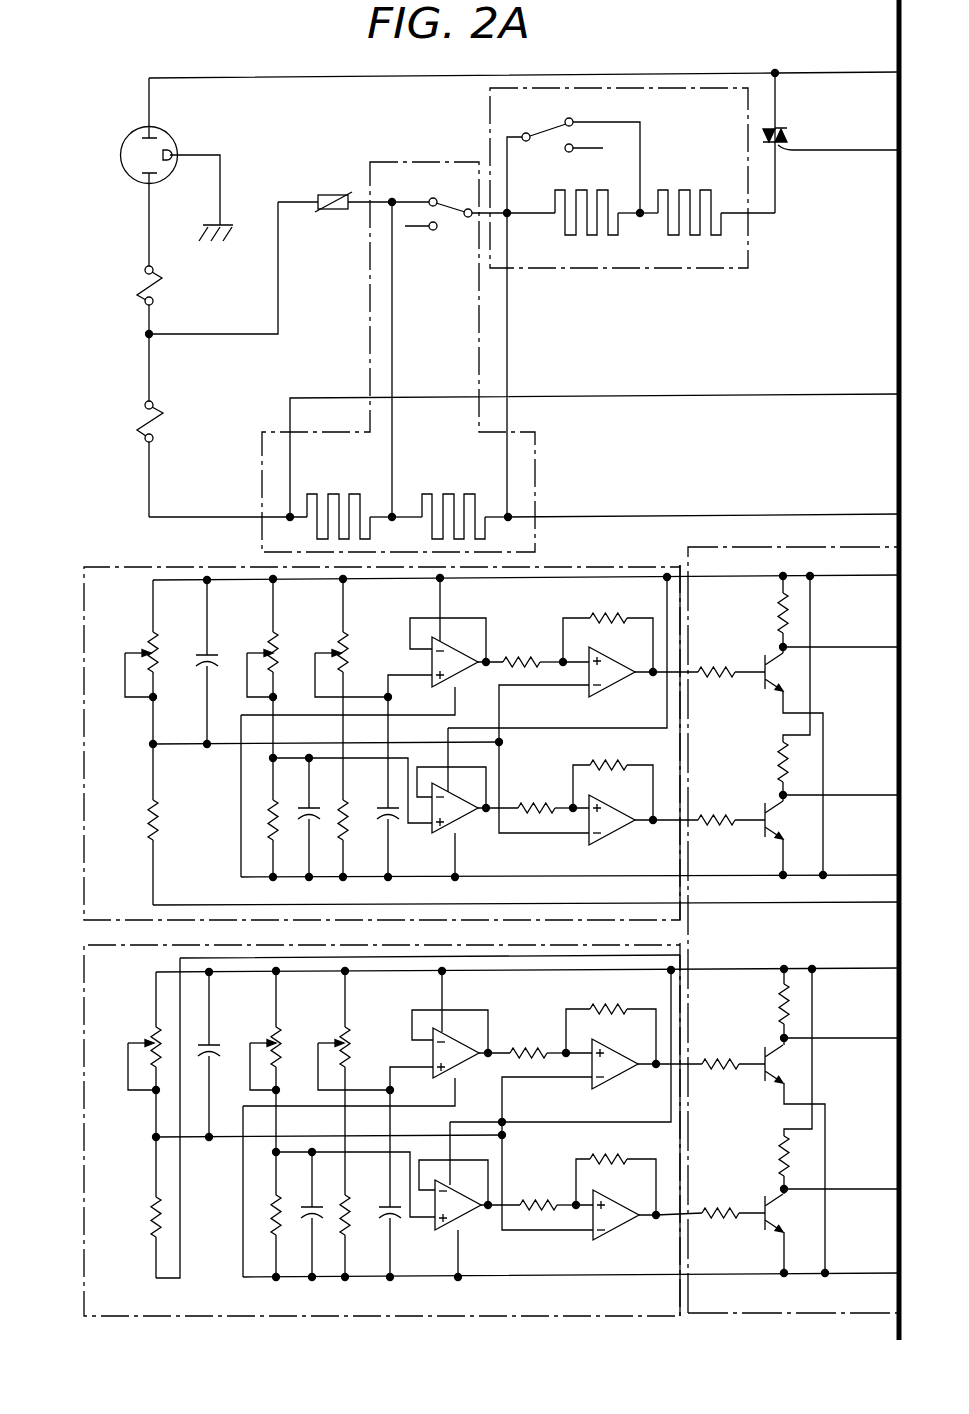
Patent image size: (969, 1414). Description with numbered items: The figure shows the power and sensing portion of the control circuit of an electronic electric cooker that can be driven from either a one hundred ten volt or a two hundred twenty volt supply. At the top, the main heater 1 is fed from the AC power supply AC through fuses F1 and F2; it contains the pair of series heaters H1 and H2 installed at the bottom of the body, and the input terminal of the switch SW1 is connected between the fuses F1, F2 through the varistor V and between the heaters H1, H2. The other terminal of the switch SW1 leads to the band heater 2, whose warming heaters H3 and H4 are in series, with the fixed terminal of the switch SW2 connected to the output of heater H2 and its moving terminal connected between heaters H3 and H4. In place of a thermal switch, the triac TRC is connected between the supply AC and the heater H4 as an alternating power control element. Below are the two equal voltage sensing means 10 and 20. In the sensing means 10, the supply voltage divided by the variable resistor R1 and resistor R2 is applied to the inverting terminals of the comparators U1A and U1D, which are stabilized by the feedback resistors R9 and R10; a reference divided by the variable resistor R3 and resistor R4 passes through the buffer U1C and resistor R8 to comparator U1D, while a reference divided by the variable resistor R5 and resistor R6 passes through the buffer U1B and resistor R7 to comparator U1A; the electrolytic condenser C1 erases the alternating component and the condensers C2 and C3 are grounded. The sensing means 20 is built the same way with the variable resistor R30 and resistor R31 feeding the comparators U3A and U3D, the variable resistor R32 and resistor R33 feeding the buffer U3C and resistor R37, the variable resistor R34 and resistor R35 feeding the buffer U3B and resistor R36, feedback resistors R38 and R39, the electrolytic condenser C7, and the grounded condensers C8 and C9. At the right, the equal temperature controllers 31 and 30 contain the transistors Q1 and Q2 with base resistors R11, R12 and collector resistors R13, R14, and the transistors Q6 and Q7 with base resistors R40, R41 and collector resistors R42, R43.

The main heater 1 is at (480, 366).
The band heater 2 is at (626, 270).
The voltage sensing means 10 is at (83, 768).
The voltage sensing means 20 is at (83, 1163).
The temperature controller 30 is at (834, 1313).
The temperature controller 31 is at (688, 547).
The AC power supply AC is at (161, 172).
The fuse F1 is at (136, 333).
The fuse F2 is at (135, 459).
The varistor V is at (335, 215).
The switch SW1 is at (456, 220).
The switch SW2 is at (573, 156).
The heater H1 is at (270, 503).
The heater H2 is at (450, 503).
The heater H3 is at (573, 226).
The heater H4 is at (707, 226).
The triac TRC is at (831, 143).
The variable resistor R1 is at (154, 662).
The resistor R2 is at (165, 824).
The variable resistor R3 is at (275, 668).
The resistor R4 is at (260, 817).
The variable resistor R5 is at (353, 689).
The resistor R6 is at (355, 838).
The resistor R7 is at (535, 649).
The resistor R8 is at (547, 796).
The feedback resistor R9 is at (608, 631).
The feedback resistor R10 is at (613, 778).
The base resistor R11 is at (709, 659).
The base resistor R12 is at (709, 808).
The collector resistor R13 is at (823, 613).
The collector resistor R14 is at (823, 687).
The electrolytic condenser C1 is at (213, 662).
The condenser C2 is at (316, 817).
The condenser C3 is at (400, 776).
The comparator U1A is at (578, 734).
The buffer U1B is at (456, 632).
The buffer U1C is at (467, 822).
The comparator U1D is at (615, 813).
The transistor Q1 is at (794, 761).
The transistor Q2 is at (787, 835).
The variable resistor R30 is at (137, 1054).
The resistor R31 is at (137, 1207).
The variable resistor R32 is at (282, 1061).
The resistor R33 is at (270, 1214).
The variable resistor R34 is at (356, 1083).
The resistor R35 is at (361, 1236).
The resistor R36 is at (540, 1040).
The resistor R37 is at (550, 1193).
The feedback resistor R38 is at (611, 1022).
The feedback resistor R39 is at (616, 1173).
The base resistor R40 is at (710, 1051).
The base resistor R41 is at (710, 1201).
The collector resistor R42 is at (823, 1005).
The collector resistor R43 is at (823, 1081).
The electrolytic condenser C7 is at (215, 1054).
The condenser C8 is at (318, 1214).
The condenser C9 is at (400, 1172).
The comparator U3A is at (581, 1128).
The buffer U3B is at (461, 1024).
The buffer U3C is at (469, 1218).
The comparator U3D is at (618, 1208).
The transistor Q6 is at (795, 1155).
The transistor Q7 is at (788, 1231).